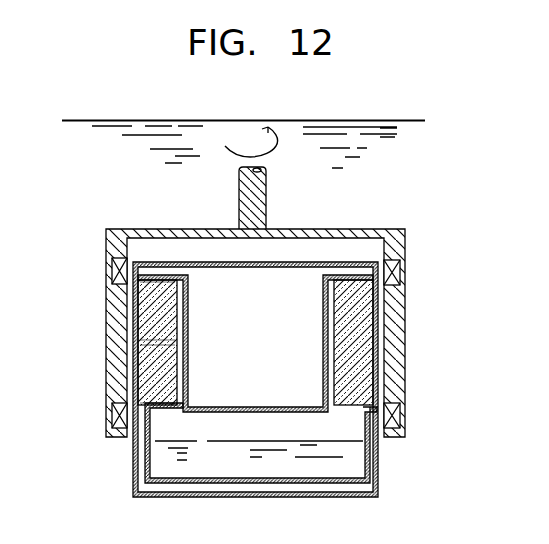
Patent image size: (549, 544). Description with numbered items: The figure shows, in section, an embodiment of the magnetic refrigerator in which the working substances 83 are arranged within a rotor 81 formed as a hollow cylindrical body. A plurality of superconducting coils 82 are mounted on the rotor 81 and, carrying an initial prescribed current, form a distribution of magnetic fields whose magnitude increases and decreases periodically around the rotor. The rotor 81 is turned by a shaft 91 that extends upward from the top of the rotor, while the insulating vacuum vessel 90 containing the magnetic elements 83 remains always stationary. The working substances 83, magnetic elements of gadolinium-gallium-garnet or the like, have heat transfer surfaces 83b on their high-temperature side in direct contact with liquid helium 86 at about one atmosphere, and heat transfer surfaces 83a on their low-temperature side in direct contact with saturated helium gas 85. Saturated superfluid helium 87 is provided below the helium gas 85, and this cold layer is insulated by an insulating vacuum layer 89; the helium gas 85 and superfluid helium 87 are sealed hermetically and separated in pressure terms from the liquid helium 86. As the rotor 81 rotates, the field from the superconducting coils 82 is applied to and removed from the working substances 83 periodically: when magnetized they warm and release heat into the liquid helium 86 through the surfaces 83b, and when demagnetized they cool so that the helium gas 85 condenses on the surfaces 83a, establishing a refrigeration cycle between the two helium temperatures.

The rotor 81 is at (400, 333).
The superconducting coils 82 is at (394, 273).
The working substances 83 is at (137, 333).
The heat transfer surfaces on the low-temperature side 83a is at (137, 374).
The heat transfer surfaces on the high-temperature side 83b is at (137, 299).
The saturated helium gas 85 is at (163, 428).
The liquid helium 86 is at (395, 163).
The saturated superfluid helium 87 is at (158, 467).
The insulating vacuum layer 89 is at (313, 372).
The insulating vacuum vessel 90 is at (377, 457).
The shaft 91 is at (238, 207).